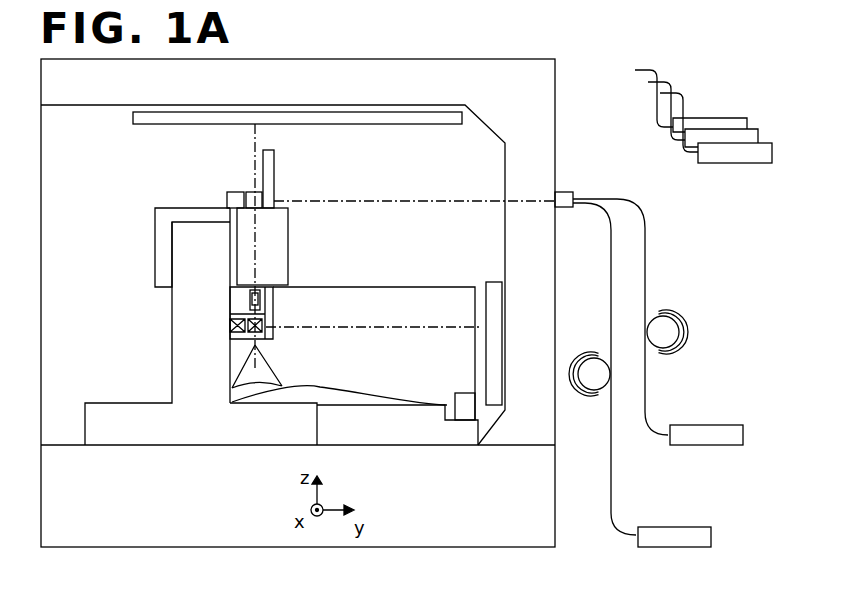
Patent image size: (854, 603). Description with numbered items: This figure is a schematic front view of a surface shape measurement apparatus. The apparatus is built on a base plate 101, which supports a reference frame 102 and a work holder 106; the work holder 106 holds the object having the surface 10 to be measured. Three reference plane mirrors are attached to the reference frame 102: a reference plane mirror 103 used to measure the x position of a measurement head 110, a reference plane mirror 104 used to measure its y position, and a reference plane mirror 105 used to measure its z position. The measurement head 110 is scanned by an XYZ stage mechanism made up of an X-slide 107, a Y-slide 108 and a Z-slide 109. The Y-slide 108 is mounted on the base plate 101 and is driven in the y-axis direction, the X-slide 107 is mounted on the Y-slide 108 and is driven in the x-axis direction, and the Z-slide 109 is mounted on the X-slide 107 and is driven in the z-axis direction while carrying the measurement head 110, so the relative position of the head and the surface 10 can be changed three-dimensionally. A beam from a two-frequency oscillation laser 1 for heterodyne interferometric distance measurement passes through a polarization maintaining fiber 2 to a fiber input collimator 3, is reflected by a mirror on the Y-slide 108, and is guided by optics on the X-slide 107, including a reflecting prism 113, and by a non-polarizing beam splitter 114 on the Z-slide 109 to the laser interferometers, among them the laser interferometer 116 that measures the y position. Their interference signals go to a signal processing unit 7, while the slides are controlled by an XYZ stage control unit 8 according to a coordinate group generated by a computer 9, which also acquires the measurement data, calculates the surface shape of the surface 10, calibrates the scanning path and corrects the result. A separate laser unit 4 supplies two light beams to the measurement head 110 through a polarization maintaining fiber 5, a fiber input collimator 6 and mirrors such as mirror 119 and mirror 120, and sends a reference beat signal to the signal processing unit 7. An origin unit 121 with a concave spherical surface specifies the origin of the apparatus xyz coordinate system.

The 2-frequency oscillation laser 1 is at (674, 535).
The polarization maintaining fiber 2 is at (612, 253).
The fiber input collimator 3 is at (577, 198).
The laser unit 4 is at (705, 433).
The polarization maintaining fiber 5 is at (647, 280).
The fiber input collimator 6 is at (561, 190).
The signal processing unit 7 is at (703, 120).
The XYZ stage control unit 8 is at (730, 137).
The computer (processor) 9 is at (763, 150).
The surface to be measured 10 is at (340, 398).
The base plate 101 is at (513, 517).
The reference frame 102 is at (518, 72).
The reference plane mirror 103 is at (425, 302).
The reference plane mirror 104 is at (495, 297).
The reference plane mirror 105 is at (382, 118).
The work holder 106 is at (383, 430).
The X-slide 107 is at (155, 214).
The Y-slide 108 is at (187, 387).
The Z-slide 109 is at (275, 160).
The measurement head 110 is at (248, 307).
The reflecting prism 113 is at (252, 193).
The non-polarizing beam splitter 114 is at (265, 299).
The laser interferometer 116 is at (258, 333).
The mirror 119 is at (232, 193).
The mirror 120 is at (230, 327).
The origin unit 121 is at (463, 408).